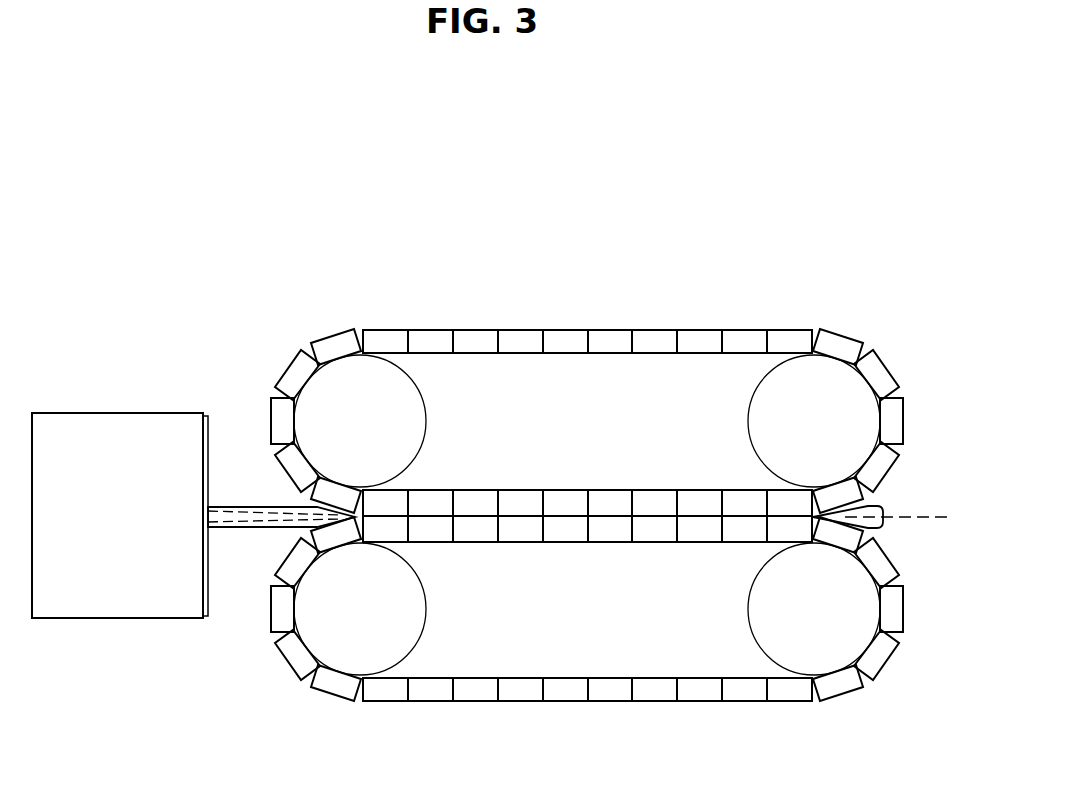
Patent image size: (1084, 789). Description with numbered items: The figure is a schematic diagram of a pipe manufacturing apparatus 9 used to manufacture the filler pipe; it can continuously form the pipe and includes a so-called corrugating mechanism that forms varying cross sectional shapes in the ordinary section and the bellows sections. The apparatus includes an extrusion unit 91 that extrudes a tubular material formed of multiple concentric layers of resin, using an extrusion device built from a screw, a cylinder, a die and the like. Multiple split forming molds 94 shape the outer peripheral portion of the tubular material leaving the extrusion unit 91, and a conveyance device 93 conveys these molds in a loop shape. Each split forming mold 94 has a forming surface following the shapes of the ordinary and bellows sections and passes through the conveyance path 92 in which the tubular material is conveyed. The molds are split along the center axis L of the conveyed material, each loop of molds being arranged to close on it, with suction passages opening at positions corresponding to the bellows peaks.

The pipe manufacturing apparatus 9 is at (284, 266).
The extrusion unit 91 is at (117, 413).
The conveyance path 92 is at (254, 530).
The conveyance device 93 is at (823, 405).
The split forming molds 94 is at (518, 530).
The center axis L is at (895, 505).